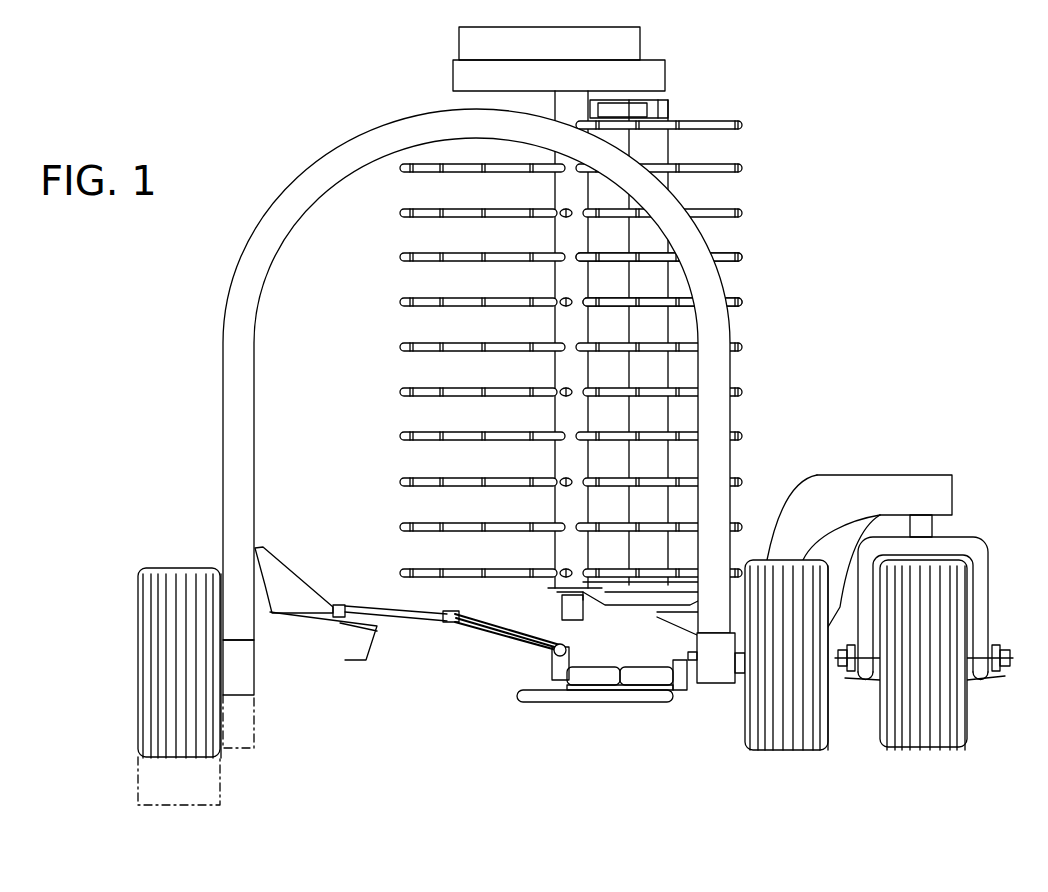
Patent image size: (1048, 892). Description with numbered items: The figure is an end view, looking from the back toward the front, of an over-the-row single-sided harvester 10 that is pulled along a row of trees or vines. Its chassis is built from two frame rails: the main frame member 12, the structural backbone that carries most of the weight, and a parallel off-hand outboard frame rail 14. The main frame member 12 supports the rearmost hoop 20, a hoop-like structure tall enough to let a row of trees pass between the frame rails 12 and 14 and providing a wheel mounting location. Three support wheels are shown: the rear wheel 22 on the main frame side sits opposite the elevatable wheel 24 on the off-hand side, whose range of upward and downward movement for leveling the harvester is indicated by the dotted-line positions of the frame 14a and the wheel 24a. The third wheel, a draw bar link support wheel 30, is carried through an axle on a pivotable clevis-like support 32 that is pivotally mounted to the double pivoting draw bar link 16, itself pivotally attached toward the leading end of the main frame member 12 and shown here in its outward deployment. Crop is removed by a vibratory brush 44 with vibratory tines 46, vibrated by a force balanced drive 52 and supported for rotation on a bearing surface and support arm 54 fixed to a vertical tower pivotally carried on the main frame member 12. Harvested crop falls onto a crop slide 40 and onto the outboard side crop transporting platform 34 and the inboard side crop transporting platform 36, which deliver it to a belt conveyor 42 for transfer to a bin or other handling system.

The over-the-row single-sided harvester 10 is at (297, 128).
The main frame member 12 is at (718, 688).
The outboard frame rail 14 is at (258, 628).
The frame in dotted line position 14a is at (258, 710).
The double pivoting draw bar link 16 is at (880, 474).
The rearmost hoop 20 is at (229, 262).
The rear wheel 22 is at (828, 740).
The wheel 24 is at (138, 582).
The wheel in dotted line position 24a is at (140, 779).
The draw bar link support wheel 30 is at (968, 742).
The pivotable clevis-like support 32 is at (990, 568).
The outboard side crop transporting platform 34 is at (400, 623).
The inboard side crop transporting platform 36 is at (488, 637).
The crop slide 40 is at (284, 567).
The belt conveyor 42 is at (601, 718).
The vibratory brush 44 is at (755, 203).
The vibratory tines 46 is at (728, 308).
The force balanced drive 52 is at (641, 38).
The bearing surface and support arm 54 is at (573, 620).